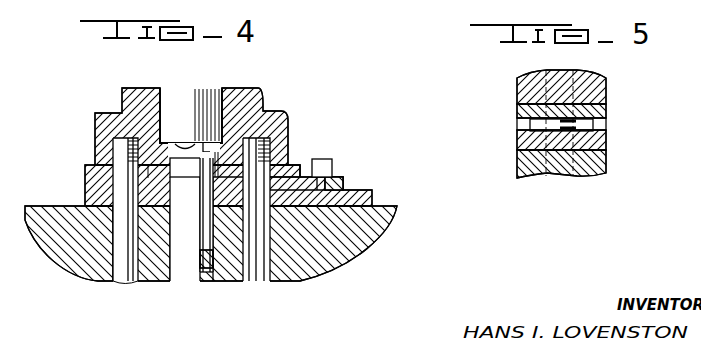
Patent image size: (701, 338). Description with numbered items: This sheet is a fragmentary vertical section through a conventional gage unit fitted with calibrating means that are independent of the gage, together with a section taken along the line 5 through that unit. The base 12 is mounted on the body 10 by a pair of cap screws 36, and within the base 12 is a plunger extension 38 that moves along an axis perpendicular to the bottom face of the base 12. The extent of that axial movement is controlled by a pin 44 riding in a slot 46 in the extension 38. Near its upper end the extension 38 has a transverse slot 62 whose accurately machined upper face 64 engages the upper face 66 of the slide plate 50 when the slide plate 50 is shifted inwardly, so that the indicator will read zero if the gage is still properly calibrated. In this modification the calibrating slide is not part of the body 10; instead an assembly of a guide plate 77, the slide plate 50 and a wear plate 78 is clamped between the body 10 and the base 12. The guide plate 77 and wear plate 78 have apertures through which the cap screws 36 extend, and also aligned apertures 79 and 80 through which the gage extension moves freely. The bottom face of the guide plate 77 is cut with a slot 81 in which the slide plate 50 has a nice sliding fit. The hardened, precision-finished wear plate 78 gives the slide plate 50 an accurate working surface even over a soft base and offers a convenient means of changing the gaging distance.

In FIG. 4, the section line 5 is at (252, 121).
In FIG. 4, the body 10 is at (284, 124).
In FIG. 5, the body 10 is at (607, 89).
In FIG. 4, the base 12 is at (363, 230).
In FIG. 5, the base 12 is at (587, 171).
In FIG. 4, the cap screws 36 is at (122, 272).
In FIG. 4, the plunger extension 38 is at (185, 265).
In FIG. 4, the pin 44 is at (209, 258).
In FIG. 4, the slot 46 is at (213, 275).
In FIG. 4, the slide plate 50 is at (338, 177).
In FIG. 5, the slide plate 50 is at (607, 126).
In FIG. 4, the transverse slot 62 is at (210, 197).
In FIG. 4, the upper face of slot 64 is at (203, 180).
In FIG. 4, the upper face of slide plate 66 is at (202, 198).
In FIG. 4, the guide plate 77 is at (294, 165).
In FIG. 5, the guide plate 77 is at (607, 111).
In FIG. 4, the wear plate 78 is at (385, 177).
In FIG. 5, the wear plate 78 is at (607, 152).
In FIG. 4, the aperture 79 is at (172, 150).
In FIG. 4, the aperture 80 is at (153, 243).
In FIG. 4, the slot 81 is at (152, 178).
In FIG. 5, the slot 81 is at (572, 129).